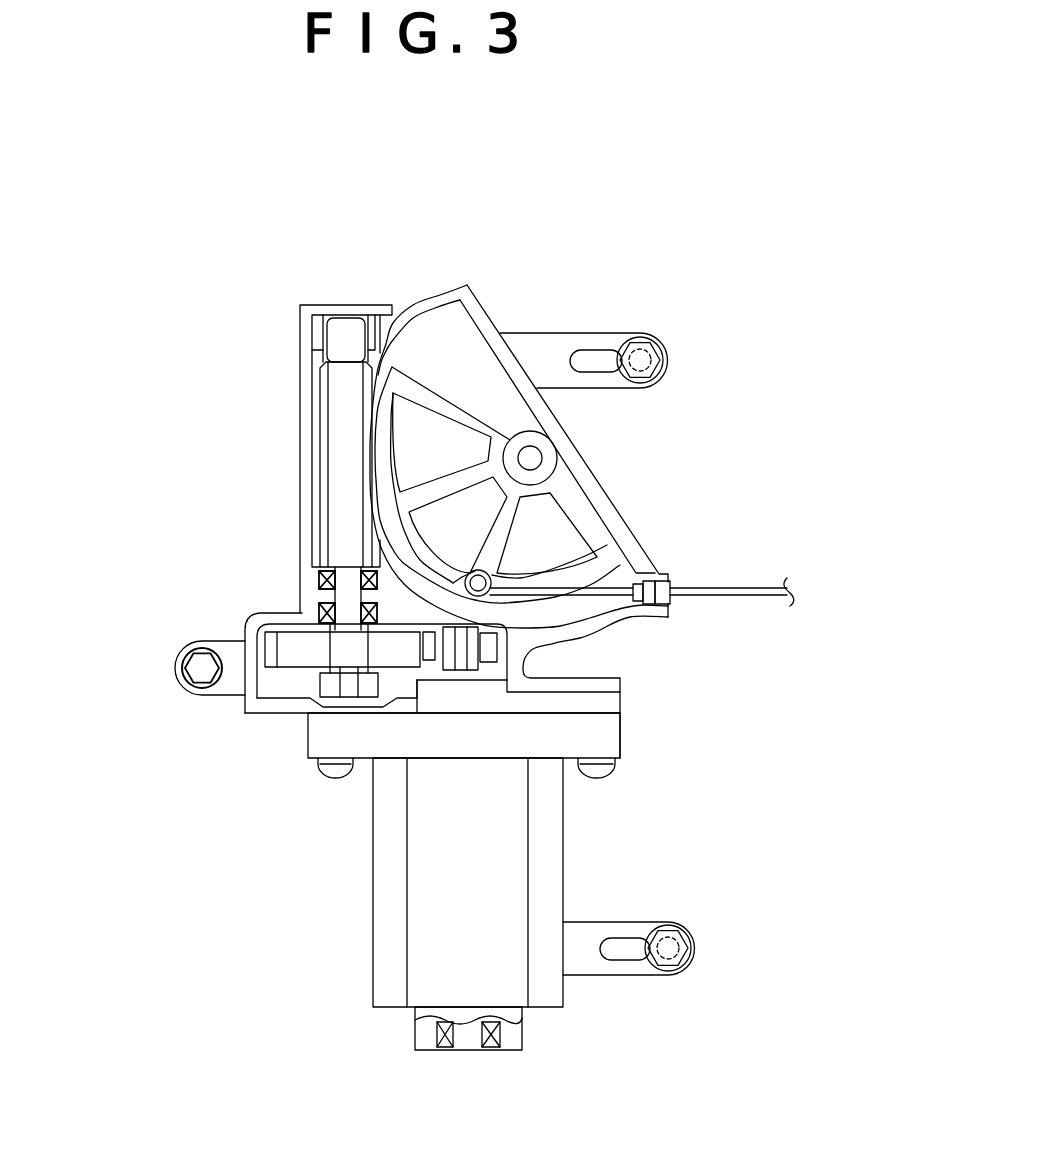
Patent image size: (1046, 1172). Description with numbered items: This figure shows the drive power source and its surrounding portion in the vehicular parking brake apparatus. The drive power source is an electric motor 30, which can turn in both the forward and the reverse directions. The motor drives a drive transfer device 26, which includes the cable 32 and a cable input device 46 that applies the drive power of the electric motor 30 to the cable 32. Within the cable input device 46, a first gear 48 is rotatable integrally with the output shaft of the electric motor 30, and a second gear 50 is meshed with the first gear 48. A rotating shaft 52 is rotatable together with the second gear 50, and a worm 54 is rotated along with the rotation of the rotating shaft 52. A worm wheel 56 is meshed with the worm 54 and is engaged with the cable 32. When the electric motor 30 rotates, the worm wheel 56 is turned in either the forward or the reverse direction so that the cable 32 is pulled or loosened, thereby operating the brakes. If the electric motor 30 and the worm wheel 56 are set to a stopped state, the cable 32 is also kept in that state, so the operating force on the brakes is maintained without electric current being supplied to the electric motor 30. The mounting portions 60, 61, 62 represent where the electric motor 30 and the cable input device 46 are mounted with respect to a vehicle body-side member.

The drive transfer device 26 is at (658, 621).
The electric motor 30 is at (373, 880).
The cable 32 is at (718, 590).
The cable input device 46 is at (217, 591).
The first gear 48 is at (497, 655).
The second gear 50 is at (290, 653).
The rotating shaft 52 is at (347, 598).
The worm 54 is at (325, 428).
The worm wheel 56 is at (465, 412).
The mounting portion 60 is at (667, 990).
The mounting portion 61 is at (167, 673).
The mounting portion 62 is at (655, 292).